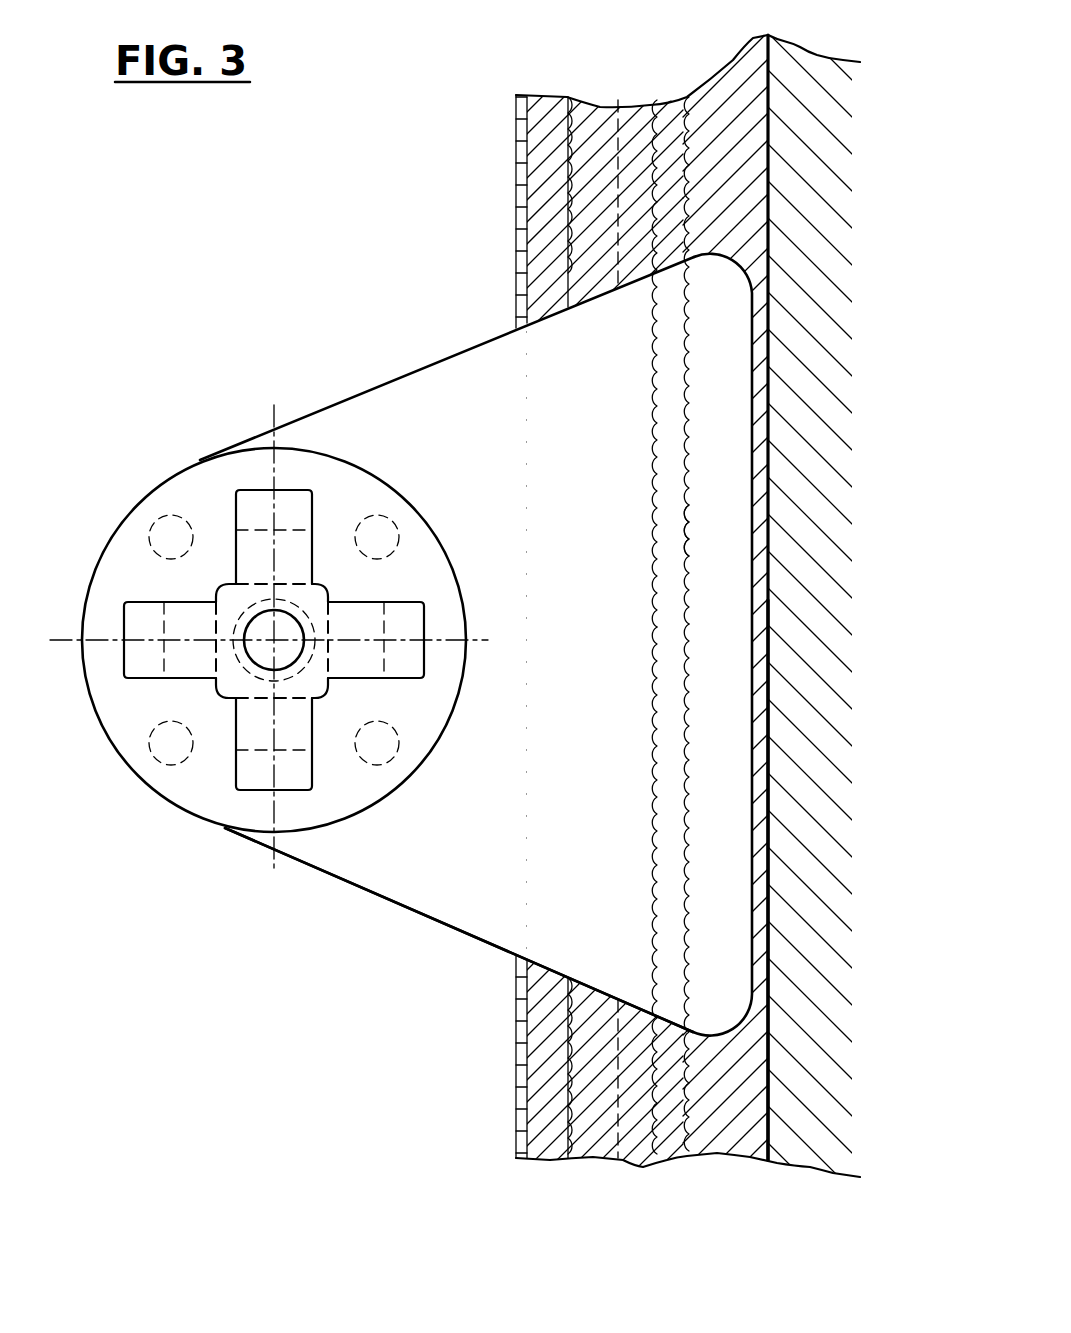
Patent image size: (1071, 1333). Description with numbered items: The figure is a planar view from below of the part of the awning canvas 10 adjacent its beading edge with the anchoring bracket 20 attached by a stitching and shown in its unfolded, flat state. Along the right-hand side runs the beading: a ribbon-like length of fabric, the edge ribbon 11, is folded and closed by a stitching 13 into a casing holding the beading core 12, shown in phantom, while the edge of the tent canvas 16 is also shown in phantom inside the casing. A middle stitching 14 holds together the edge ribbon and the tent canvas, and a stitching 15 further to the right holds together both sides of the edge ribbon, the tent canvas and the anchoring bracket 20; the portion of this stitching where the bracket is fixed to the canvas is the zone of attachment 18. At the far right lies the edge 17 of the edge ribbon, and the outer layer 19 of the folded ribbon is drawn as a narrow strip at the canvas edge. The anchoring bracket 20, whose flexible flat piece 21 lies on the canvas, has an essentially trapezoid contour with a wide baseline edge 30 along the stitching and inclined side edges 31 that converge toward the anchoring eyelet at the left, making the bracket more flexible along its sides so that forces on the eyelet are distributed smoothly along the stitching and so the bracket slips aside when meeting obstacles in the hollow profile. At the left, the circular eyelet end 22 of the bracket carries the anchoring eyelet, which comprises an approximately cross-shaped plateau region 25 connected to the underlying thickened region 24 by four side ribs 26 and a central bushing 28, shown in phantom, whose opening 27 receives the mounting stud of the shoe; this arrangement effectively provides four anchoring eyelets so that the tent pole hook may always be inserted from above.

The awning canvas 10 is at (815, 1148).
The edge ribbon 11 is at (599, 1140).
The beading core 12 is at (547, 1030).
The stitching 13 is at (580, 1165).
The middle stitching 14 is at (661, 1165).
The border stitching 15 is at (689, 1160).
The edge of the tent canvas 16 is at (624, 1162).
The edge of the edge ribbon 17 is at (775, 1162).
The zone of attachment 18 is at (687, 536).
The outer skin 19 is at (518, 1154).
The anchoring bracket 20 is at (390, 900).
The flat piece 21 is at (593, 572).
The circular flange 22 is at (175, 804).
The thickened region 24 is at (385, 497).
The plateau region 25 is at (265, 552).
The side ribs 26 is at (250, 499).
The opening 27 is at (247, 655).
The central bushing 28 is at (253, 670).
The baseline edge 30 is at (762, 466).
The inclined side edges 31 is at (466, 350).